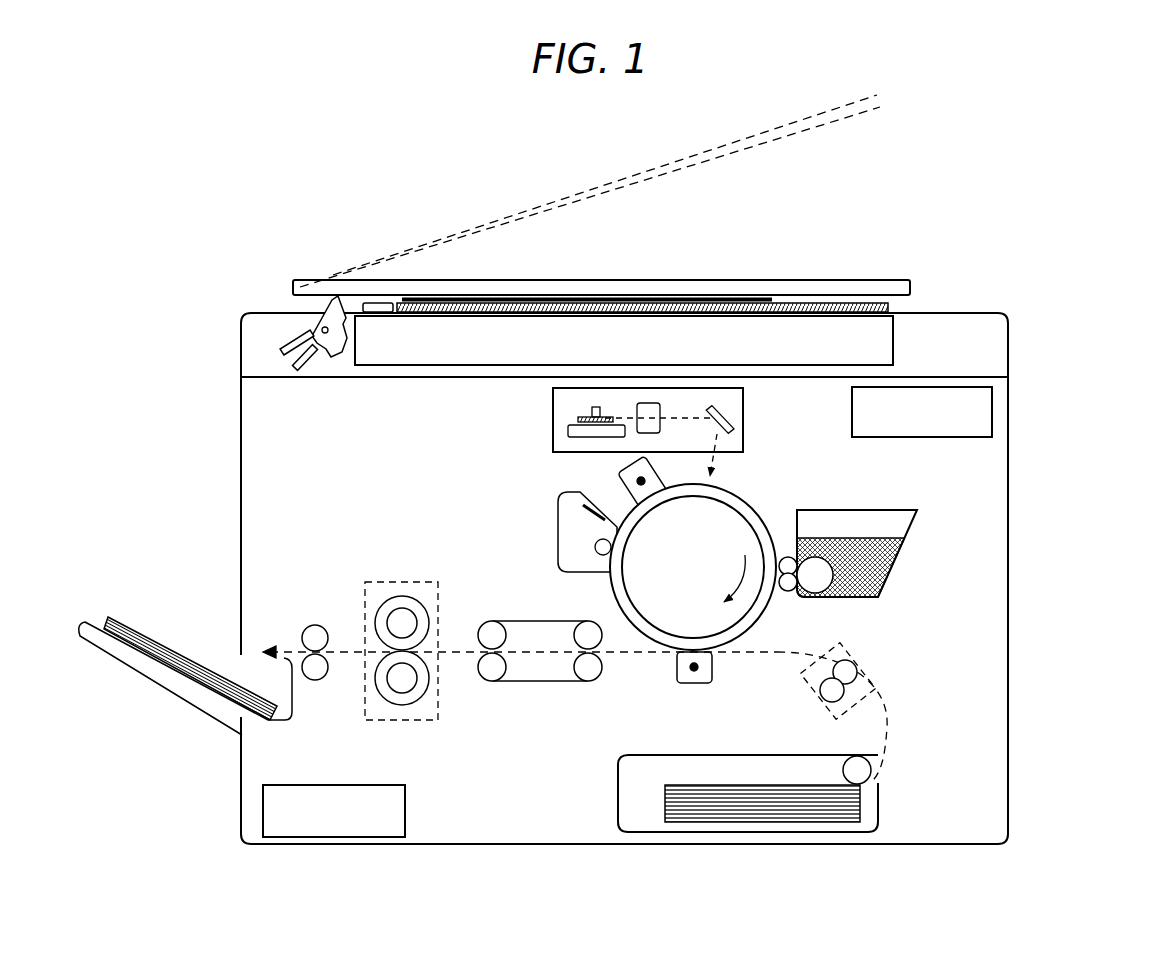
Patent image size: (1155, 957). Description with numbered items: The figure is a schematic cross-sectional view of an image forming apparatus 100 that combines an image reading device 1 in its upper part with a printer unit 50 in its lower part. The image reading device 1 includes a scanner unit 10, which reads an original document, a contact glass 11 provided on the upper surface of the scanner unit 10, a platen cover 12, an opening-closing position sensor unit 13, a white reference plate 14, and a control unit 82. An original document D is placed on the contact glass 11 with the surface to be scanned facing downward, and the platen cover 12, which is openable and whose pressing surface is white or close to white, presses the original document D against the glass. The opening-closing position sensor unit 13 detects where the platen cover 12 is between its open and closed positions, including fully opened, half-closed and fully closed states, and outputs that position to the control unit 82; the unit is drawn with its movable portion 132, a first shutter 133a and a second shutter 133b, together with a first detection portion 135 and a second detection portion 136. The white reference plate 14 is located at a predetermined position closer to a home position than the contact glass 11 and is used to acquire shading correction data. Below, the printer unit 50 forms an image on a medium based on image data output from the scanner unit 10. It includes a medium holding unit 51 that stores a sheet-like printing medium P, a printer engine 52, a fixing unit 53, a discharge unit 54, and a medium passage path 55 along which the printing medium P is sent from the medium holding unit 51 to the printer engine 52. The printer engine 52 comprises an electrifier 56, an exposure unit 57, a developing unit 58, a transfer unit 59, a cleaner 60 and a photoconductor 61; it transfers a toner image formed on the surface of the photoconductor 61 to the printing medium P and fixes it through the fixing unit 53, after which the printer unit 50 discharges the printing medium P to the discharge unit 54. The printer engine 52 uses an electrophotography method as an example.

The image reading device 1 is at (1077, 318).
The image forming apparatus 100 is at (988, 245).
The scanner unit 10 is at (841, 332).
The contact glass 11 is at (808, 303).
The platen cover 12 is at (722, 280).
The opening-closing position sensor unit 13 is at (302, 326).
The white reference plate 14 is at (368, 303).
The movable portion 132 is at (337, 300).
The first shutter 133a is at (318, 352).
The second shutter 133b is at (332, 357).
The first detection portion 135 is at (283, 352).
The second detection portion 136 is at (300, 366).
The printer unit 50 is at (266, 511).
The medium holding unit 51 is at (618, 790).
The printer engine 52 is at (798, 488).
The fixing unit 53 is at (406, 722).
The discharge unit 54 is at (176, 690).
The medium passage path 55 is at (893, 702).
The electrifier 56 is at (625, 482).
The exposure unit 57 is at (553, 418).
The developing unit 58 is at (904, 556).
The transfer unit 59 is at (694, 684).
The cleaner 60 is at (558, 530).
The photoconductor 61 is at (749, 494).
The control unit 82 is at (1000, 412).
The original document D is at (568, 297).
The printing medium P is at (178, 648).